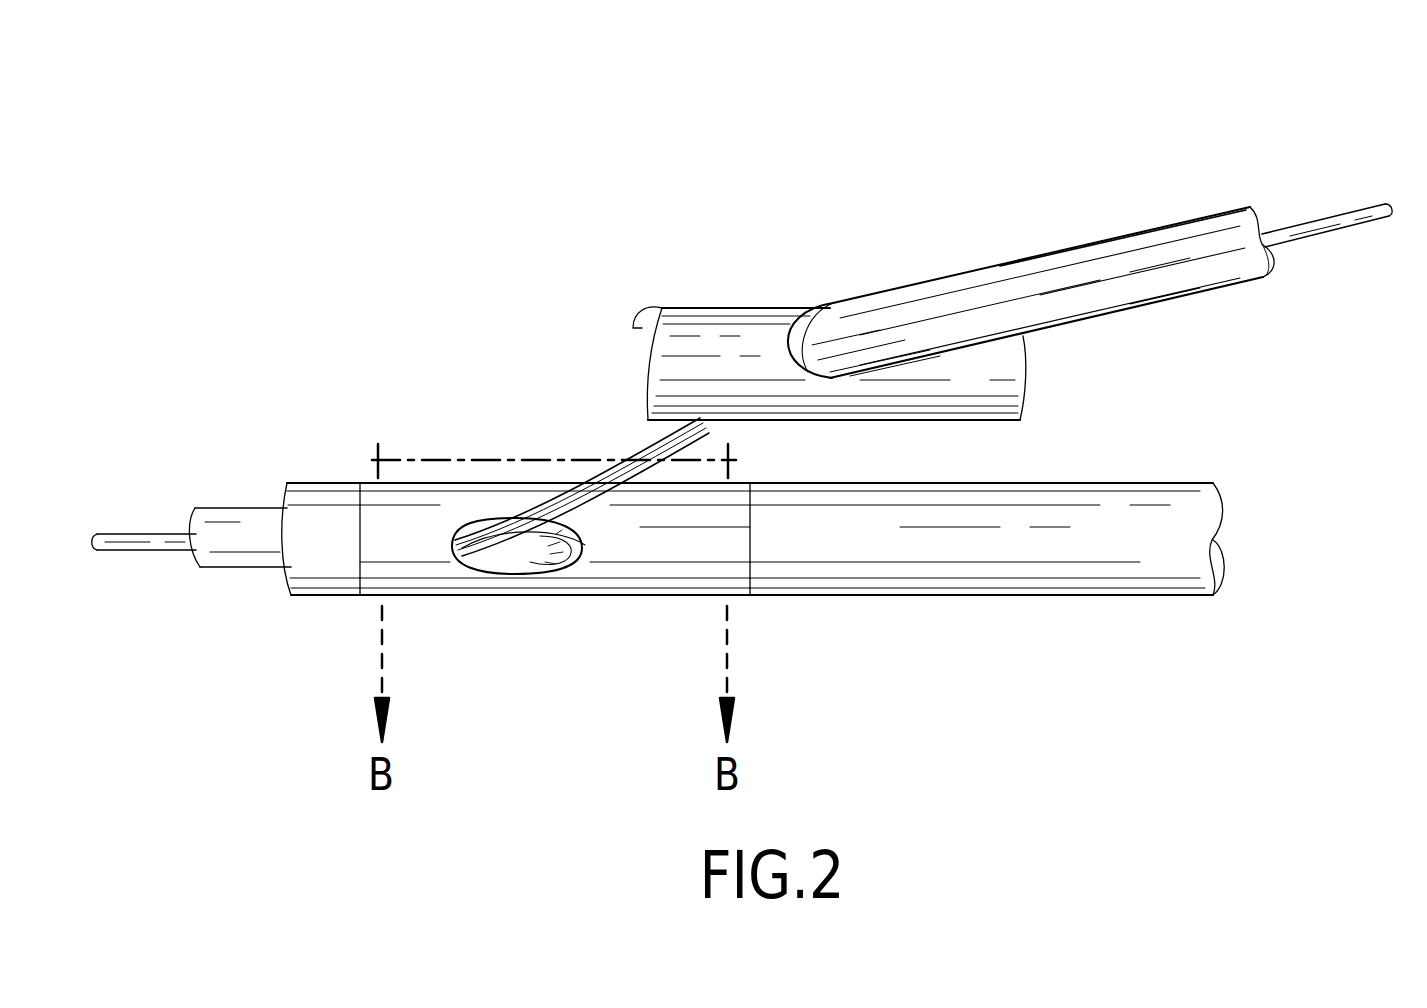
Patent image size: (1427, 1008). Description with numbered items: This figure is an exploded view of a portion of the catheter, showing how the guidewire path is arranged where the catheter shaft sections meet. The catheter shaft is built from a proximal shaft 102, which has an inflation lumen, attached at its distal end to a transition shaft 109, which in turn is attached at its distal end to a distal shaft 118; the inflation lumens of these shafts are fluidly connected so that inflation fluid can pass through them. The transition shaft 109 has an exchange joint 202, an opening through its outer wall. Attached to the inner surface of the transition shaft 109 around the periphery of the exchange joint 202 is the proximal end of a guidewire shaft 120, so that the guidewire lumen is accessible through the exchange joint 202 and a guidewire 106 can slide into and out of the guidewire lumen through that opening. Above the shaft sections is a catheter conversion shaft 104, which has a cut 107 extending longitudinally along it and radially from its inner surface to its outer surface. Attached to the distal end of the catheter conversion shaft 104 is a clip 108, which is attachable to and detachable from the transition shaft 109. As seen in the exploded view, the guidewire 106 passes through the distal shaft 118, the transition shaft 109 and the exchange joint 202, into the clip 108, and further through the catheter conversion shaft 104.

The proximal shaft 102 is at (1005, 545).
The catheter conversion shaft 104 is at (1070, 195).
The guidewire 106 is at (148, 527).
The cut 107 is at (1181, 223).
The clip 108 is at (752, 344).
The transition shaft 109 is at (696, 555).
The distal shaft 118 is at (332, 525).
The guidewire shaft 120 is at (506, 516).
The exchange joint 202 is at (512, 576).